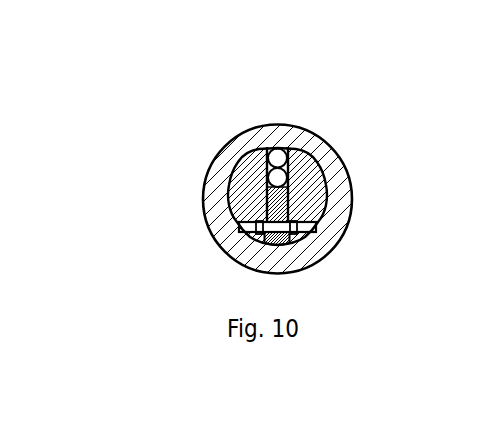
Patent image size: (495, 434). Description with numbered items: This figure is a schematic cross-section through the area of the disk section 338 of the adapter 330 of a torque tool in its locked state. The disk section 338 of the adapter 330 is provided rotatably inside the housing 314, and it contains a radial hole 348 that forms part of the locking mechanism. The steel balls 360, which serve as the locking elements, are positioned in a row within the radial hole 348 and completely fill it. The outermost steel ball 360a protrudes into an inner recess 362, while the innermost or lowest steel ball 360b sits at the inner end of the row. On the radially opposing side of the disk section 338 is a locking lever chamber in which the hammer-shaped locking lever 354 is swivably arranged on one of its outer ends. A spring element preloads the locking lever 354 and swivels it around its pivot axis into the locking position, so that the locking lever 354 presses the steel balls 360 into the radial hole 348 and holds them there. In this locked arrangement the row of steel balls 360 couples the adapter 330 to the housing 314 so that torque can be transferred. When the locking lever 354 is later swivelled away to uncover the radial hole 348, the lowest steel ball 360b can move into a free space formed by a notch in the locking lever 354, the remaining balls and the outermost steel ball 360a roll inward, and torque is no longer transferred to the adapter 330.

The housing body 314 is at (355, 207).
The adapter 330 is at (316, 191).
The disk section 338 is at (312, 218).
The radial hole 348 is at (312, 150).
The locking lever 354 is at (240, 222).
The steel balls 360 is at (252, 154).
The outermost steel ball 360a is at (268, 157).
The lowest steel ball 360b is at (233, 176).
The inner recess 362 is at (279, 153).